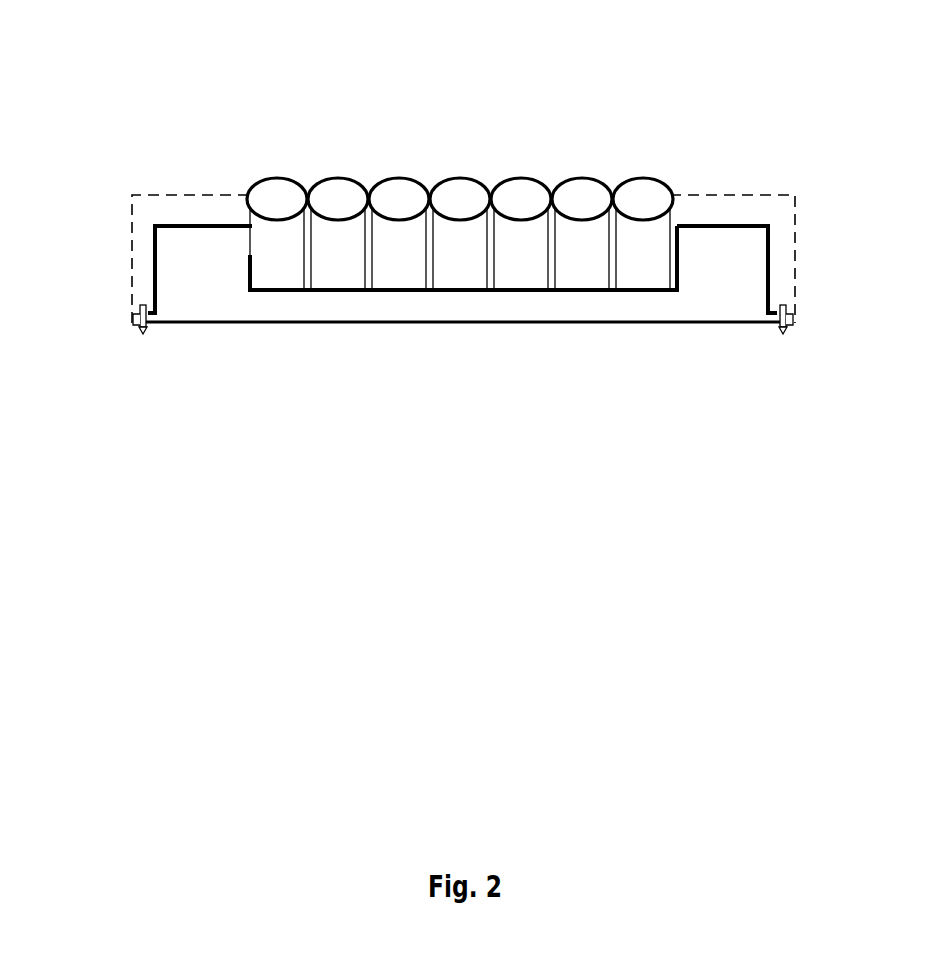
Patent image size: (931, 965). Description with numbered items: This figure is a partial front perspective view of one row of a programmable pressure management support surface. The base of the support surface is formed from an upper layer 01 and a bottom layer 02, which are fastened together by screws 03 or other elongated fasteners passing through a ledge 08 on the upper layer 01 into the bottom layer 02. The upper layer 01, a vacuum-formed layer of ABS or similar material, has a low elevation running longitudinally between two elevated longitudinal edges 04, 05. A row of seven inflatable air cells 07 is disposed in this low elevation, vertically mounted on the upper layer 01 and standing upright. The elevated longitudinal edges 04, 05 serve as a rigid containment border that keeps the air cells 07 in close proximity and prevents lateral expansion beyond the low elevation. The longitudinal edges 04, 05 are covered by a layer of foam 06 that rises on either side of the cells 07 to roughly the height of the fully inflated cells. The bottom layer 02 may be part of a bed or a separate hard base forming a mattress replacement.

The upper layer 01 is at (456, 350).
The bottom layer 02 is at (430, 323).
The screws 03 is at (138, 328).
The longitudinal edge 04 is at (205, 275).
The longitudinal edge 05 is at (728, 285).
The layer of foam 06 is at (157, 207).
The air cells 07 is at (583, 172).
The ledge 08 is at (775, 312).